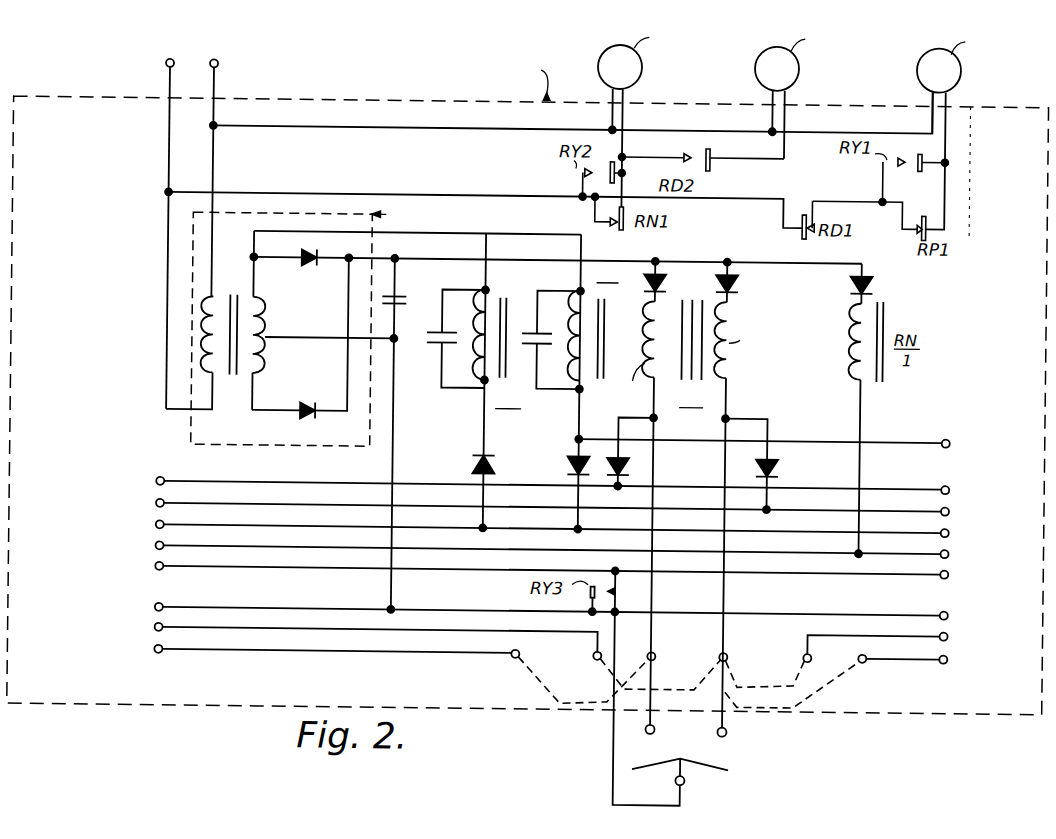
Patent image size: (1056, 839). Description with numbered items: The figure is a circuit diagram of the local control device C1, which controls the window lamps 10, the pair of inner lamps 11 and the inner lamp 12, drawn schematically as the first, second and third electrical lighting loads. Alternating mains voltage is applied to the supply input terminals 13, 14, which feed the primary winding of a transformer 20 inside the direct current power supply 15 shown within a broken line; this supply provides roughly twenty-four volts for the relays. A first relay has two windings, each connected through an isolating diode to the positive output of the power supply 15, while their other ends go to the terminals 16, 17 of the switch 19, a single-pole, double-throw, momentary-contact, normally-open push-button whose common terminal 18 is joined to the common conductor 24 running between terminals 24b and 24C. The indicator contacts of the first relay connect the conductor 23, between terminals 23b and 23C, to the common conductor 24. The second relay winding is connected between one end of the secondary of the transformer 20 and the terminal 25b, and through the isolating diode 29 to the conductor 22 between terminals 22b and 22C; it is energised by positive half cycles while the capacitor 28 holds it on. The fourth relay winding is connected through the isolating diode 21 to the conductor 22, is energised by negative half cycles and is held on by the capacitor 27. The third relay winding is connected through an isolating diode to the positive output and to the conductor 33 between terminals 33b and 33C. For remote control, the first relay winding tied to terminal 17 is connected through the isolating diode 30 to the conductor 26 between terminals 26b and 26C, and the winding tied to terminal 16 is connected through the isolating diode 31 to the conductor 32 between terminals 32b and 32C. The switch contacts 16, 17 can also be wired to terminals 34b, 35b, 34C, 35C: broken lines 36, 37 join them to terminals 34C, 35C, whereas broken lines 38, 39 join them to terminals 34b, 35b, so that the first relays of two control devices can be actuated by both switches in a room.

The window lamps 10 is at (957, 66).
The inner lamps 11 is at (638, 66).
The inner lamp 12 is at (795, 66).
The supply input terminal 13 is at (214, 70).
The supply input terminal 14 is at (162, 69).
The direct current power supply 15 is at (190, 436).
The switch terminal 16 is at (731, 731).
The switch terminal 17 is at (652, 733).
The common terminal 18 is at (689, 780).
The switch 19 is at (729, 752).
The transformer 20 is at (234, 392).
The isolating diode 21 is at (472, 462).
The conductor 22 is at (300, 526).
The conductor 23 is at (281, 572).
The common conductor 24 is at (811, 609).
The conductor 26 is at (267, 482).
The capacitor 27 is at (424, 350).
The capacitor 28 is at (551, 346).
The isolating diode 29 is at (568, 461).
The isolating diode 30 is at (640, 461).
The isolating diode 31 is at (780, 461).
The conductor 32 is at (253, 507).
The conductor 33 is at (258, 550).
The broken-line connection 36 is at (675, 668).
The broken-line connection 37 is at (536, 680).
The broken-line connection 38 is at (795, 672).
The broken-line connection 39 is at (840, 676).
The local control device C1 is at (60, 101).
The terminal 26C is at (157, 484).
The terminal 32C is at (154, 507).
The terminal 22C is at (157, 530).
The terminal 33C is at (158, 553).
The terminal 23C is at (158, 573).
The terminal 24C is at (157, 611).
The terminal 34C is at (157, 631).
The terminal 35C is at (157, 654).
The terminal 25b is at (950, 437).
The terminal 26b is at (950, 488).
The terminal 32b is at (950, 510).
The terminal 22b is at (950, 533).
The terminal 33b is at (950, 553).
The terminal 23b is at (950, 574).
The terminal 24b is at (950, 615).
The terminal 34b is at (950, 635).
The terminal 35b is at (950, 658).